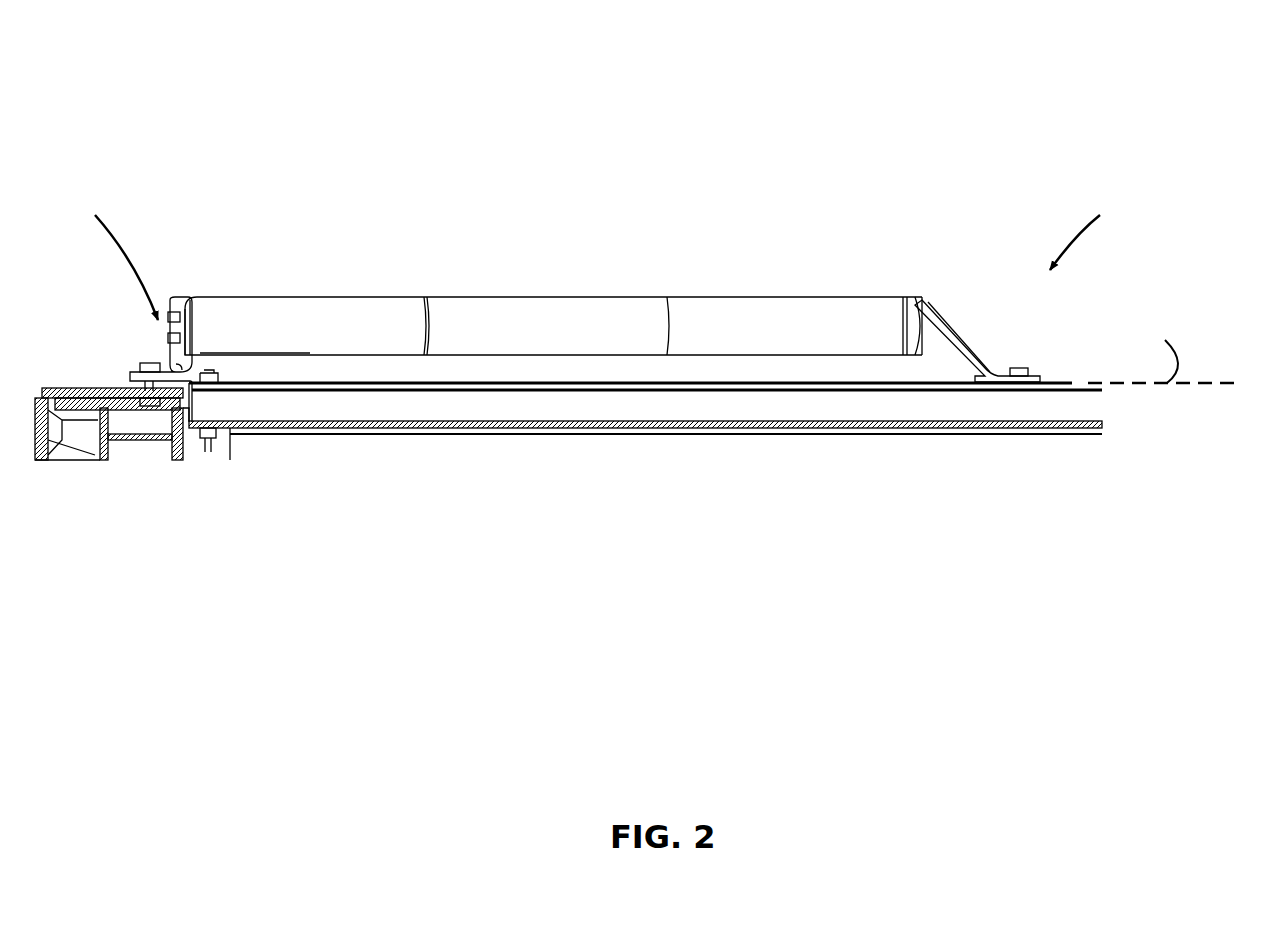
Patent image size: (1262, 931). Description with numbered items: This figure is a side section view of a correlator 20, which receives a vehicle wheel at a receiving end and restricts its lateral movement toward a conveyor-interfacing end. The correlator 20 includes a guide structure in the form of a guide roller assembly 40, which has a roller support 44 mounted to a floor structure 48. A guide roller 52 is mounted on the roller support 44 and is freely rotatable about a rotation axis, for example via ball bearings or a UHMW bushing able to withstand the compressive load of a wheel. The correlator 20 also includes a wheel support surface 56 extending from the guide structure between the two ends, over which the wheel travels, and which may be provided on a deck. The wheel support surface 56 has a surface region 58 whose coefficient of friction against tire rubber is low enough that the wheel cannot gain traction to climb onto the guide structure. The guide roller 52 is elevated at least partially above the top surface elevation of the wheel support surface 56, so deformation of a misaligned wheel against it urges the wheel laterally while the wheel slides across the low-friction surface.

The correlator 20 is at (530, 153).
The guide roller assembly 40 is at (712, 253).
The guide roller 52 is at (840, 300).
The wheel support surface 56 is at (365, 382).
The surface region 58 is at (480, 383).
The roller support 44 is at (975, 360).
The floor structure 48 is at (915, 413).